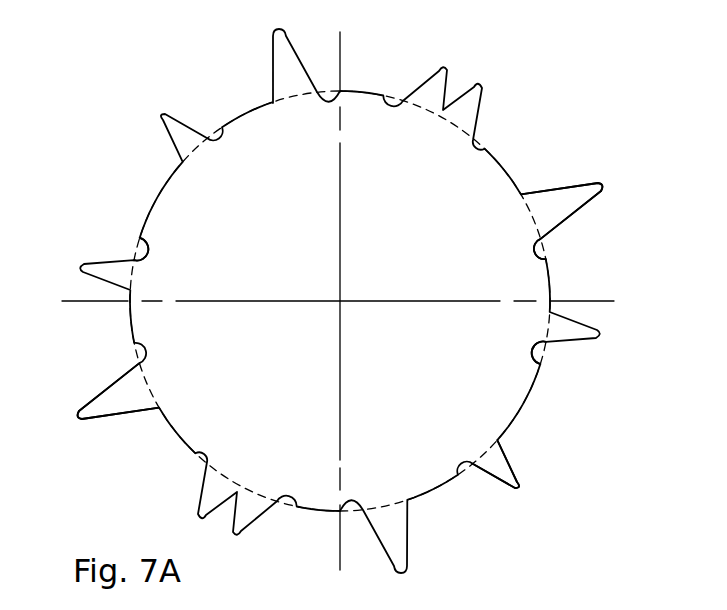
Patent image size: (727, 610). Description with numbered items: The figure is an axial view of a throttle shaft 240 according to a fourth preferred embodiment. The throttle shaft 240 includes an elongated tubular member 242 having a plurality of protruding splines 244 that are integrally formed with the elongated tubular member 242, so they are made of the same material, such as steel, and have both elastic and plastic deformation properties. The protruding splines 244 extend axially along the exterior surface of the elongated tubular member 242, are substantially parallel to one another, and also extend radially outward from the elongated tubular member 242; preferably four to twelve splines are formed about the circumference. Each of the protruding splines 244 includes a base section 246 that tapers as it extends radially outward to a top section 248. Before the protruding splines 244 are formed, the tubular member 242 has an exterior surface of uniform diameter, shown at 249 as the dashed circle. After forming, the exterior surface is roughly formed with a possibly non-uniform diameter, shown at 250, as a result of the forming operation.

The throttle shaft 240 is at (590, 481).
The elongated tubular member 242 is at (440, 487).
The protruding splines 244 is at (118, 410).
The base section 246 is at (557, 232).
The top section 248 is at (597, 190).
The exterior surface having a uniform diameter 249 is at (132, 345).
The roughly formed exterior surface 250 is at (133, 252).